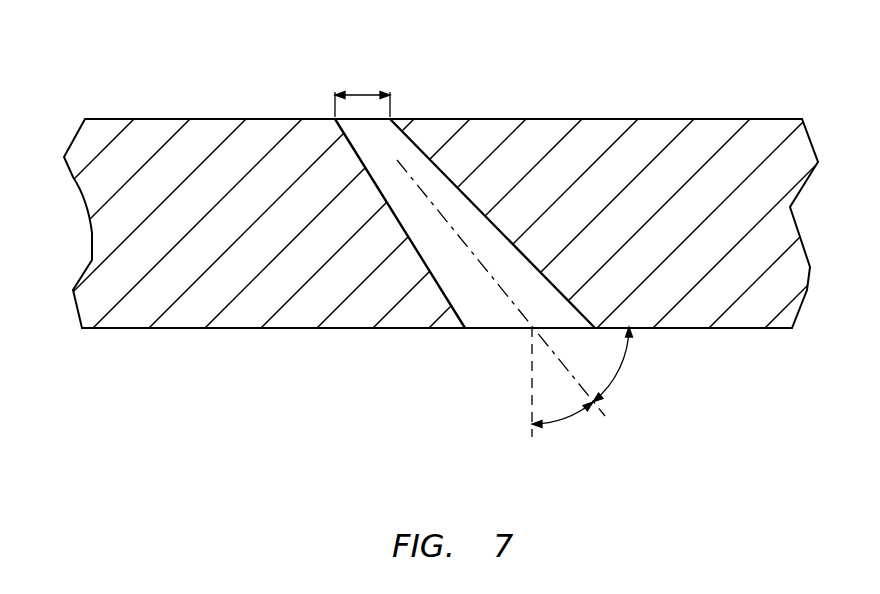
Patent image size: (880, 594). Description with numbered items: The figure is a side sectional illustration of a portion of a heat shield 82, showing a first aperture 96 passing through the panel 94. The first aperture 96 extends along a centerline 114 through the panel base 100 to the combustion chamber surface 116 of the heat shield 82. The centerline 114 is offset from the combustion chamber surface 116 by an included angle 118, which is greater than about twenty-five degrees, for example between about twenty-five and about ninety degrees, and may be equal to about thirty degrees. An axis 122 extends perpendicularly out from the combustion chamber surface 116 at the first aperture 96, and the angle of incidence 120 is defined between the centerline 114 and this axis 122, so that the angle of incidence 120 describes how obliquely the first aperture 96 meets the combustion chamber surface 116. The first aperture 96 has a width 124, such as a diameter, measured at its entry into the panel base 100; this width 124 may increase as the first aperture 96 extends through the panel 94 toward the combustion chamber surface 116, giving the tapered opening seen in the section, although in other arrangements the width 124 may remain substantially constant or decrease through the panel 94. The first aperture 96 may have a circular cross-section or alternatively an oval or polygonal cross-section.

The heat shield 82 is at (440, 185).
The panel 94 is at (745, 94).
The first aperture 96 is at (415, 156).
The panel base 100 is at (242, 328).
The centerline 114 is at (528, 327).
The combustion chamber surface 116 is at (747, 328).
The included angle 118 is at (620, 372).
The angle of incidence 120 is at (570, 417).
The axis 122 is at (530, 408).
The width 124 is at (363, 93).